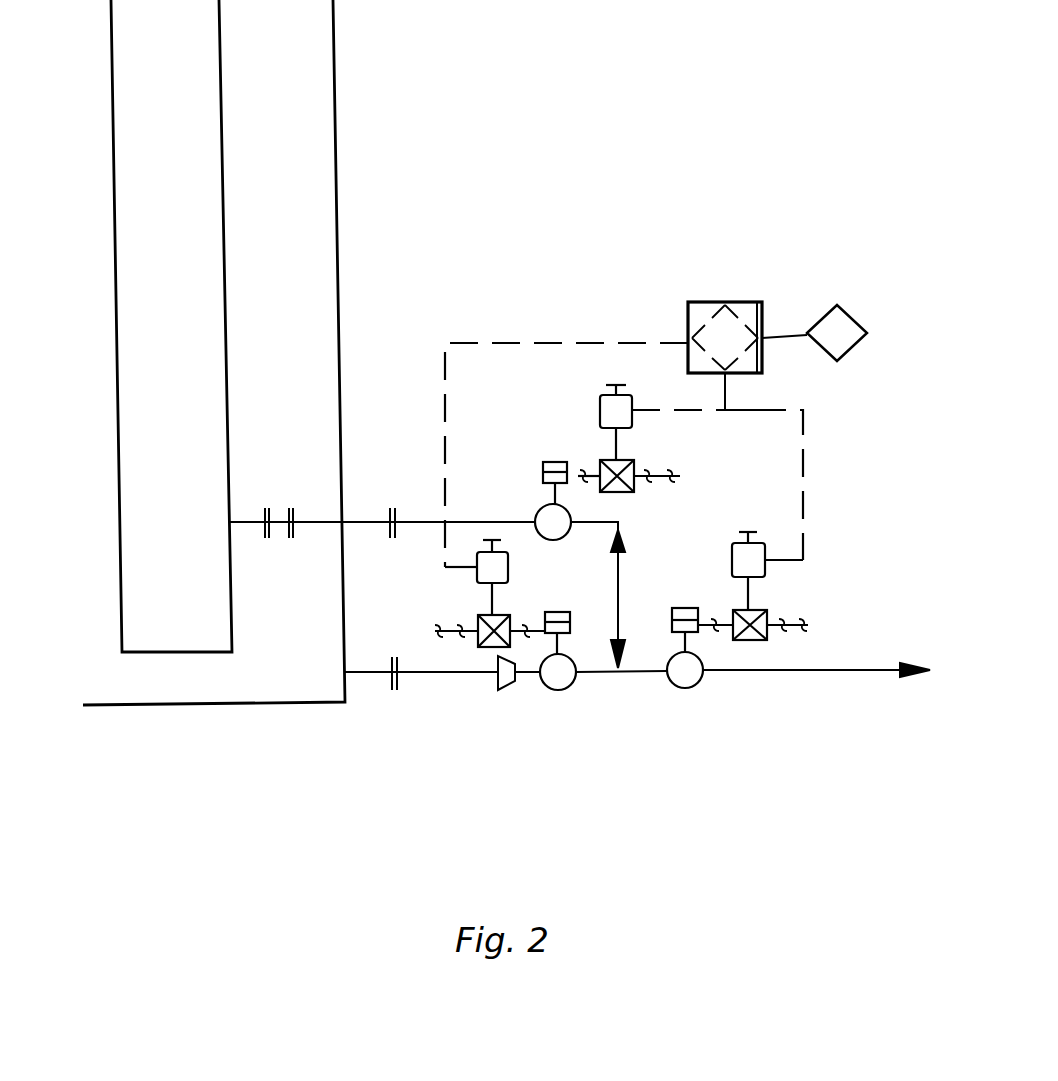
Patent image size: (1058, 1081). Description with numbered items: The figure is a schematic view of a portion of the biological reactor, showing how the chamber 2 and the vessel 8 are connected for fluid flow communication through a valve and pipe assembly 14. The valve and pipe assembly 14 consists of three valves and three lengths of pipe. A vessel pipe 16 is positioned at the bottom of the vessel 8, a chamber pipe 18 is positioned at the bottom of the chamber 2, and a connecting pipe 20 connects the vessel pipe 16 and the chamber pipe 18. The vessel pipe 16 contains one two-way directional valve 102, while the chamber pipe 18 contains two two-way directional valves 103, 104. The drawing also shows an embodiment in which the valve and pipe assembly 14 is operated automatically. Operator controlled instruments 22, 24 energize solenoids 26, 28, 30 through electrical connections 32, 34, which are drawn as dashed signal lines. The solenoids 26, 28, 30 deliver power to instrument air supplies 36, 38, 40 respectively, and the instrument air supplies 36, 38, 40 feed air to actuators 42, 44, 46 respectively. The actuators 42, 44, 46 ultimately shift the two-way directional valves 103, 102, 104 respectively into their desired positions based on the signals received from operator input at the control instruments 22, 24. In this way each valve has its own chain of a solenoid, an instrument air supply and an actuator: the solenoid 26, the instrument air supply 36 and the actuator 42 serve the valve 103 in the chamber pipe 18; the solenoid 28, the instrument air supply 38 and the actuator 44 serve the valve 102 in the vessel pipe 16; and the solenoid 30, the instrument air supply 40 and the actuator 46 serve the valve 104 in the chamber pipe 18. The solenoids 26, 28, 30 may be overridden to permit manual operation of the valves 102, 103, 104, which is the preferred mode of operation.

The chamber 2 is at (214, 352).
The vessel 8 is at (171, 326).
The valve and pipe assembly 14 is at (707, 293).
The vessel pipe 16 is at (382, 467).
The chamber pipe 18 is at (637, 718).
The connecting pipe 20 is at (609, 647).
The operator controlled instrument 22 is at (814, 333).
The operator controlled instrument 24 is at (725, 356).
The solenoid 26 is at (492, 577).
The solenoid 28 is at (616, 422).
The solenoid 30 is at (748, 571).
The electrical connection 32 is at (559, 419).
The electrical connection 34 is at (768, 476).
The instrument air supply 36 is at (500, 596).
The instrument air supply 38 is at (633, 459).
The instrument air supply 40 is at (765, 607).
The actuator 42 is at (560, 613).
The actuator 44 is at (525, 465).
The actuator 46 is at (694, 601).
The two-way directional valve 102 is at (553, 522).
The two-way directional valve 103 is at (558, 672).
The two-way directional valve 104 is at (685, 670).